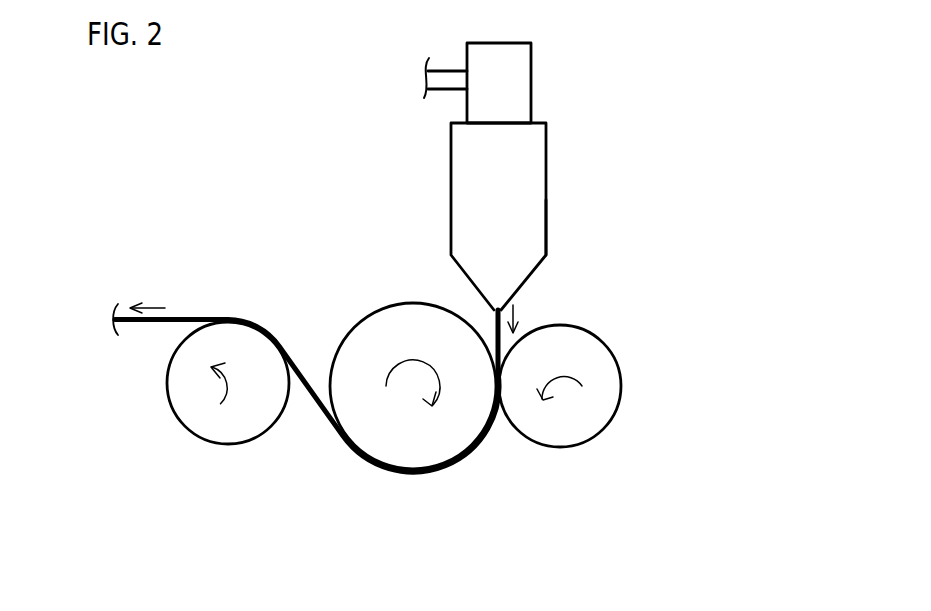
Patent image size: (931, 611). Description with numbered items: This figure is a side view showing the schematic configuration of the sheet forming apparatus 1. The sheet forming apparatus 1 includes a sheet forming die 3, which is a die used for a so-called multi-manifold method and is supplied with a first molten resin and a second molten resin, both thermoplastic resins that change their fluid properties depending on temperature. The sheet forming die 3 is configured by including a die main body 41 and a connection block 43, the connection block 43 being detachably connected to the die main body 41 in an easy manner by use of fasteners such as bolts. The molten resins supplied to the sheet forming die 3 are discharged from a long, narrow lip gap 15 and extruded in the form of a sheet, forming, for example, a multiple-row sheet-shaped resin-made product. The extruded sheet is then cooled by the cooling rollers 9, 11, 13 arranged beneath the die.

The sheet forming apparatus 1 is at (592, 57).
The sheet forming die 3 is at (550, 170).
The cooling roller 9 is at (370, 312).
The cooling roller 11 is at (621, 388).
The cooling roller 13 is at (178, 414).
The lip gap 15 is at (492, 318).
The die main body 41 is at (546, 217).
The connection block 43 is at (531, 91).